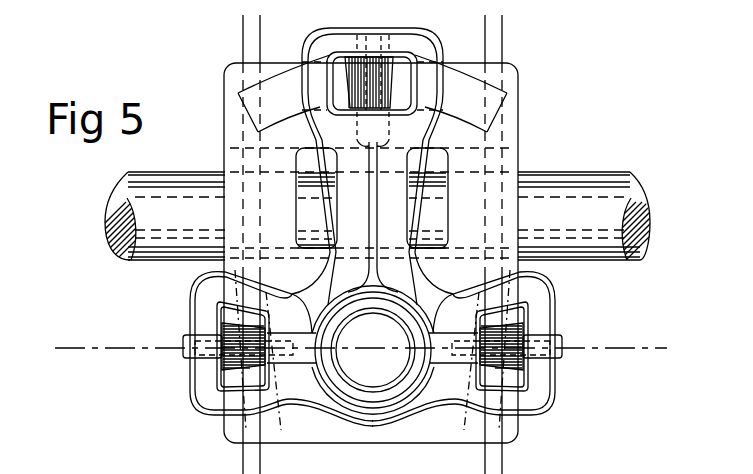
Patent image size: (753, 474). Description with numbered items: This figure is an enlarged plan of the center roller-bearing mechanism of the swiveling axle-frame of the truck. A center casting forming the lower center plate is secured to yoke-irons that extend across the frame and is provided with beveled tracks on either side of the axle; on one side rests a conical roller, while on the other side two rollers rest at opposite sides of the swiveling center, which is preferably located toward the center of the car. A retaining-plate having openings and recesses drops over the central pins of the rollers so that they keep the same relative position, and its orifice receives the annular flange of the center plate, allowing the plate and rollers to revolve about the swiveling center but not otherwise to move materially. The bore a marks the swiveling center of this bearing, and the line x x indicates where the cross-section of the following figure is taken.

The bore / hub a is at (373, 350).
The section line x is at (353, 348).